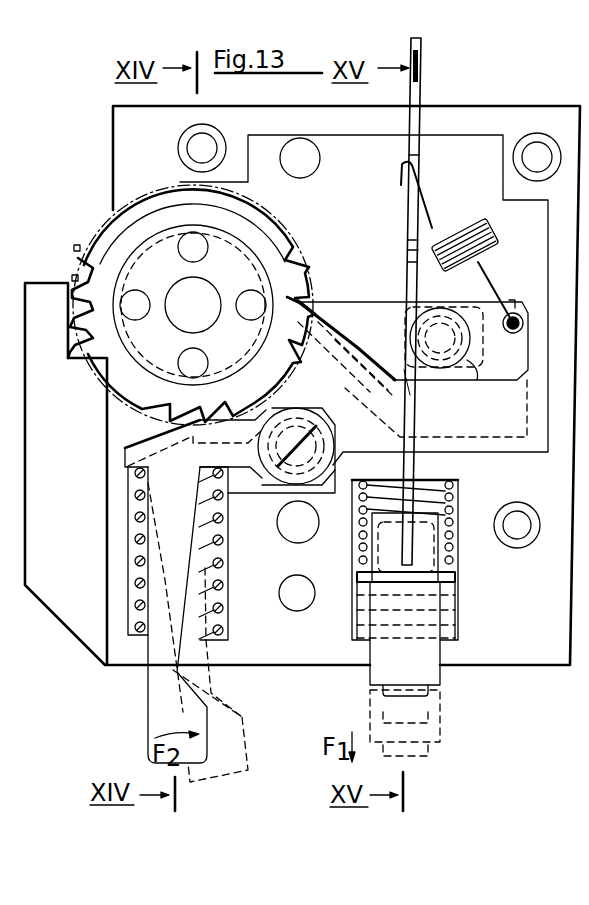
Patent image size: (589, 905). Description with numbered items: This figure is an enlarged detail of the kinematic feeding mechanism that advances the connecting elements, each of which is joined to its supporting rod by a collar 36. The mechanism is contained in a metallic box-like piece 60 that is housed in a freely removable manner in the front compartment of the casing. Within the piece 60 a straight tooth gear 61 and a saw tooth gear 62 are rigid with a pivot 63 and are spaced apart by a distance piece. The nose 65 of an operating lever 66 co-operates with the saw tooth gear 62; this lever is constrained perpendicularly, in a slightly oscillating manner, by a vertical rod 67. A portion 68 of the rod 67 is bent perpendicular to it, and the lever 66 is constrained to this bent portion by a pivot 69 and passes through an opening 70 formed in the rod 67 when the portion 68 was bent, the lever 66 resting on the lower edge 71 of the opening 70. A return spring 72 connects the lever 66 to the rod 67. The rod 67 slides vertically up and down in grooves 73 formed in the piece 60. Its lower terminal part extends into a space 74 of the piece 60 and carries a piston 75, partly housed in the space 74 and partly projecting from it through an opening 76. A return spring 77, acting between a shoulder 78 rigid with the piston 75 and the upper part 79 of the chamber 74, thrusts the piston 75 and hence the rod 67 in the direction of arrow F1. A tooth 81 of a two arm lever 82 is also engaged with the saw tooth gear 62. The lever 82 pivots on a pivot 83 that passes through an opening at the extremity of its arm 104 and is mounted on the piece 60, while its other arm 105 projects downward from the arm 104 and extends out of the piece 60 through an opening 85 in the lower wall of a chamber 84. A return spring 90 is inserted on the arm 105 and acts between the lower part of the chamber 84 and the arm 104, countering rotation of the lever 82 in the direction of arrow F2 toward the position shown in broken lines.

The collar 36 is at (77, 245).
The box-like piece 60 is at (505, 103).
The straight tooth gear 61 is at (70, 262).
The saw tooth gear 62 is at (300, 300).
The pivot 63 is at (205, 290).
The nose 65 is at (333, 312).
The operating lever 66 is at (370, 318).
The vertical rod 67 is at (410, 250).
The bent portion 68 is at (489, 323).
The pivot 69 is at (457, 378).
The opening 70 is at (410, 265).
The lower edge 71 is at (412, 368).
The return spring 72 is at (465, 225).
The grooves 73 is at (420, 112).
The space 74 is at (460, 620).
The piston 75 is at (440, 678).
The opening 76 is at (365, 660).
The return spring 77 is at (455, 502).
The shoulder 78 is at (458, 568).
The upper part 79 is at (458, 484).
The tooth 81 is at (175, 420).
The two arm lever 82 is at (110, 595).
The pivot 83 is at (312, 490).
The chamber 84 is at (137, 568).
The opening 85 is at (210, 670).
The return spring 90 is at (128, 478).
The arm 104 is at (240, 460).
The arm 105 is at (150, 708).